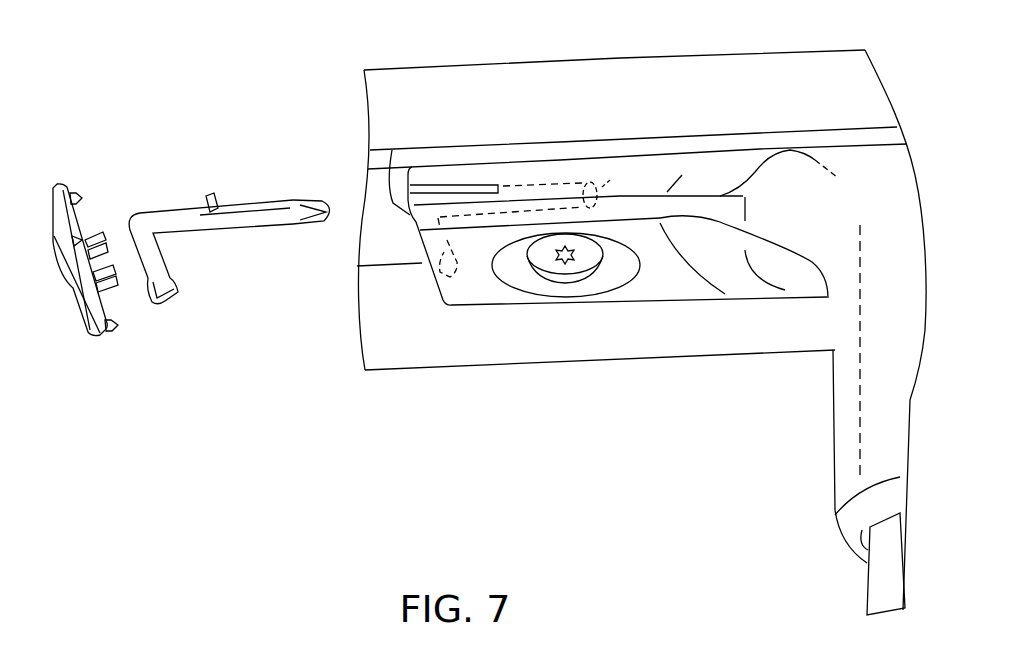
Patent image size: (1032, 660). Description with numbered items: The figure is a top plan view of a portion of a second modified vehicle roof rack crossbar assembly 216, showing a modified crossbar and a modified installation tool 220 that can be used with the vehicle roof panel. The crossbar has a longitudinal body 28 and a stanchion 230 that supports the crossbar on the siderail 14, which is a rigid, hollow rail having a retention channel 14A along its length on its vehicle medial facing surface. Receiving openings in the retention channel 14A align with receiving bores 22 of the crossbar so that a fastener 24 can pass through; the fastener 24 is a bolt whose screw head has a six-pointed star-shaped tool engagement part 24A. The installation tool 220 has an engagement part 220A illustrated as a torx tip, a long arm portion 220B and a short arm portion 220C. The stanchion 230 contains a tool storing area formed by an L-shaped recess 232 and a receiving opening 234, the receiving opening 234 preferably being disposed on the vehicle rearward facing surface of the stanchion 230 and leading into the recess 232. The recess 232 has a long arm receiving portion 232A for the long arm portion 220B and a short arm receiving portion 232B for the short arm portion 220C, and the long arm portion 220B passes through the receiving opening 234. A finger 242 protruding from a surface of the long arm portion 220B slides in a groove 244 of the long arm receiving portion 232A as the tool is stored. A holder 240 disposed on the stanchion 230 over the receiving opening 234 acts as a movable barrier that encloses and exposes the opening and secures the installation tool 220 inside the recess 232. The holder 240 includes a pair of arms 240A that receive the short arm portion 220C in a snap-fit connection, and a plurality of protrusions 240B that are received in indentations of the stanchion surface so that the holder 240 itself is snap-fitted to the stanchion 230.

The siderail 14 is at (670, 92).
The retention channel 14A is at (388, 238).
The receiving bore 22 is at (617, 277).
The fastener 24 is at (540, 262).
The tool engagement part 24A is at (565, 268).
The longitudinal body 28 is at (867, 597).
The second modified vehicle roof rack crossbar assembly 216 is at (313, 413).
The installation tool 220 is at (143, 155).
The engagement part 220A is at (327, 198).
The long arm portion 220B is at (260, 230).
The short arm portion 220C is at (168, 253).
The stanchion 230 is at (835, 427).
The recess 232 is at (523, 178).
The long arm receiving portion 232A is at (610, 177).
The short arm receiving portion 232B is at (460, 305).
The receiving opening 234 is at (392, 150).
The holder 240 is at (42, 155).
The arms 240A is at (93, 252).
The protrusions 240B is at (73, 193).
The finger 242 is at (217, 193).
The groove 244 is at (462, 195).